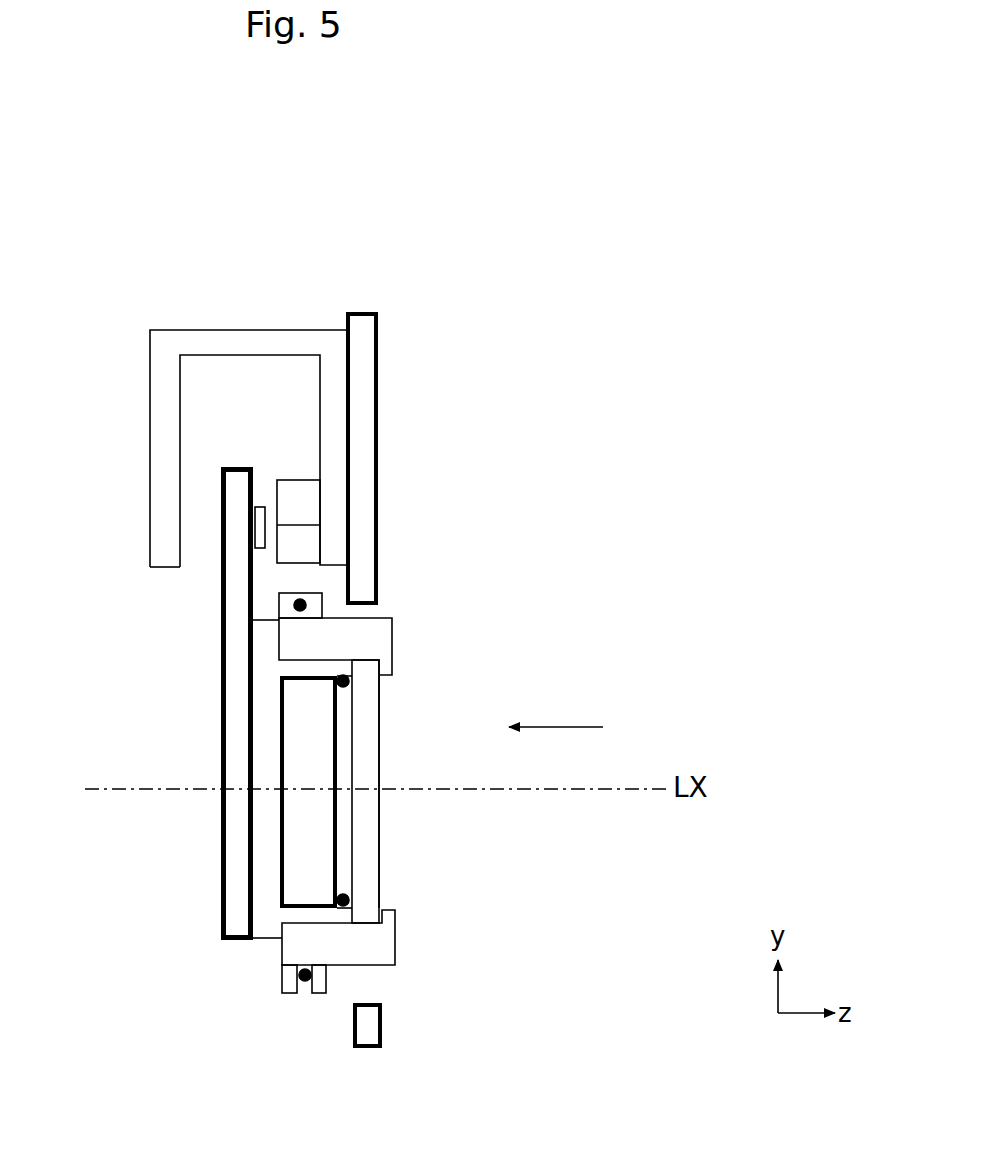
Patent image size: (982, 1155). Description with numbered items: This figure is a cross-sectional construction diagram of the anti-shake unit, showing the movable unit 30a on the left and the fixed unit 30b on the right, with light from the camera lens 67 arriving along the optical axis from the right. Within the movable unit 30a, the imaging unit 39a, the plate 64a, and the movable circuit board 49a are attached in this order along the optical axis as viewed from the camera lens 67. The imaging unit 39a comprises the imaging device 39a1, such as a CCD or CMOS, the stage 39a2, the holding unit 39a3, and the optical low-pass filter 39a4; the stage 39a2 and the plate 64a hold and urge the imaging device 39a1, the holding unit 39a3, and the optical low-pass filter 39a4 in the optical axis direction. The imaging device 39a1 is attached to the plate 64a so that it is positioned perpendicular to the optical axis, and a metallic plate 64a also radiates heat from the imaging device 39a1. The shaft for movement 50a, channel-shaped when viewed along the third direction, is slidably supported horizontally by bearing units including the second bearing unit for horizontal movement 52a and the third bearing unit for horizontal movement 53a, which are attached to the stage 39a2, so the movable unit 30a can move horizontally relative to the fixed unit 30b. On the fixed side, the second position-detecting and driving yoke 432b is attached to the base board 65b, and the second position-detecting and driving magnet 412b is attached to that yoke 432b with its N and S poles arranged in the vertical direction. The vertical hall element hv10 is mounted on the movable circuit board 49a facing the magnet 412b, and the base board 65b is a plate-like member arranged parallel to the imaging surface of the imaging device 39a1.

The movable unit 30a is at (186, 1017).
The fixed unit 30b is at (512, 1027).
The imaging unit 39a is at (525, 919).
The imaging device 39a1 is at (338, 818).
The stage 39a2 is at (393, 640).
The holding unit 39a3 is at (349, 683).
The optical low-pass filter 39a4 is at (380, 758).
The movable circuit board 49a is at (222, 760).
The shaft for movement 50a is at (304, 604).
The second bearing unit for horizontal movement 52a is at (323, 602).
The third bearing unit for horizontal movement 53a is at (282, 994).
The plate 64a is at (270, 938).
The base board 65b is at (378, 328).
The camera lens 67 is at (665, 724).
The second position-detecting and driving magnet 412b is at (277, 553).
The second position-detecting and driving yoke 432b is at (149, 330).
The vertical hall element hv10 is at (272, 478).